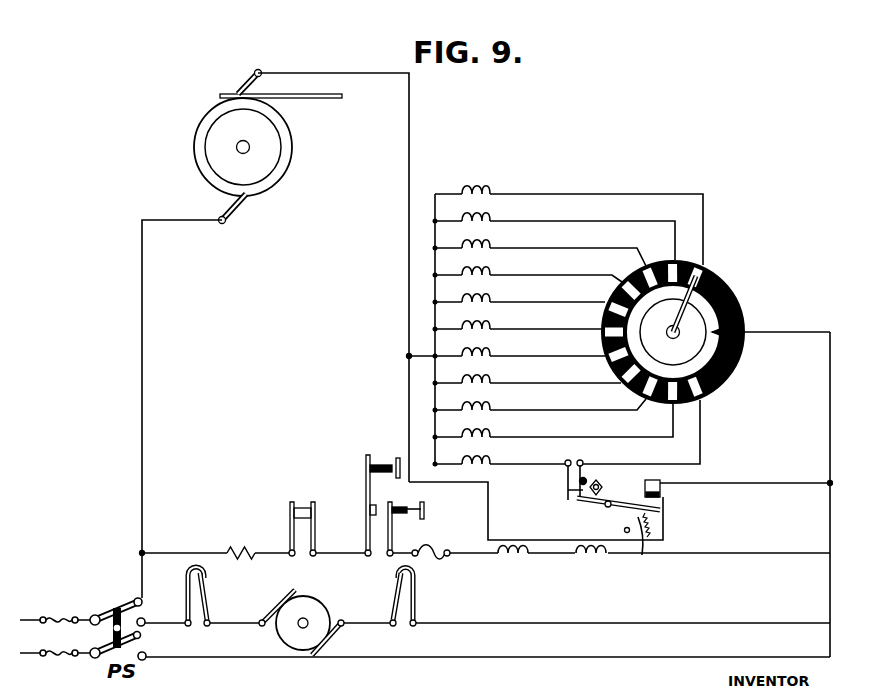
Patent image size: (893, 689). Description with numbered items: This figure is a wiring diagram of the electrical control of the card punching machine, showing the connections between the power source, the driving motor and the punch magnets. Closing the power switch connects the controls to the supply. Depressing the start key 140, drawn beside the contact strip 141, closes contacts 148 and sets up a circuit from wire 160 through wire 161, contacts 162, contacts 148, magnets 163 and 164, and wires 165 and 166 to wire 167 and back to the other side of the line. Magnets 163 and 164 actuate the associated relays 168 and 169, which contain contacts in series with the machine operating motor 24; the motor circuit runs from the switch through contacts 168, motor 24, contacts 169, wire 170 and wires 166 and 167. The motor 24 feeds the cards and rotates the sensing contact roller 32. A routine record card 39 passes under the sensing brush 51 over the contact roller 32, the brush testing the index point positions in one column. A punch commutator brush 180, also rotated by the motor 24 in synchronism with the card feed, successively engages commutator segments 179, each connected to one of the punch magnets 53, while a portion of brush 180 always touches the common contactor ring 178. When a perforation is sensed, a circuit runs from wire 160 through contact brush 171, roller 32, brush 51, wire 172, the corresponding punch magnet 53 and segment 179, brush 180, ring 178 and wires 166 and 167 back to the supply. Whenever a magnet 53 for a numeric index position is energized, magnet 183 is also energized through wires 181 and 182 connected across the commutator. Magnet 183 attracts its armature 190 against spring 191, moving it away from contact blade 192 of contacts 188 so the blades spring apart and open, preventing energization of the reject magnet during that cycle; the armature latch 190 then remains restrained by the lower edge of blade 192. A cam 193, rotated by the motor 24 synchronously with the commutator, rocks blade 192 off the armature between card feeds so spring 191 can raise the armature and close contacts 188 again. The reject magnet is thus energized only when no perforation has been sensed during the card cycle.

The machine operating motor 24 is at (290, 632).
The contact roller 32 is at (272, 181).
The routine record card 39 is at (330, 99).
The sensing brush 51 is at (250, 74).
The punch magnets 53 is at (462, 255).
The start key 140 is at (406, 513).
The contact strip 141 is at (385, 465).
The contacts 148 is at (385, 500).
The wire 160 is at (142, 421).
The wire 161 is at (185, 546).
The contacts 162 is at (300, 502).
The magnet 163 is at (516, 569).
The magnet 164 is at (596, 569).
The wire 165 is at (726, 555).
The wire 166 is at (830, 447).
The wire 167 is at (510, 660).
The relay 168 is at (205, 576).
The relay 169 is at (394, 578).
The wire 170 is at (545, 627).
The contact brush 171 is at (236, 210).
The wire 172 is at (409, 232).
The common contactor ring 178 is at (735, 318).
The commutator segments 179 is at (650, 268).
The punch commutator brush 180 is at (735, 304).
The wire 181 is at (488, 505).
The wire 182 is at (745, 478).
The magnet 183 is at (660, 492).
The contacts 188 is at (568, 498).
The armature 190 is at (665, 517).
The spring 191 is at (657, 549).
The contact blade 192 is at (583, 506).
The cam 193 is at (601, 486).